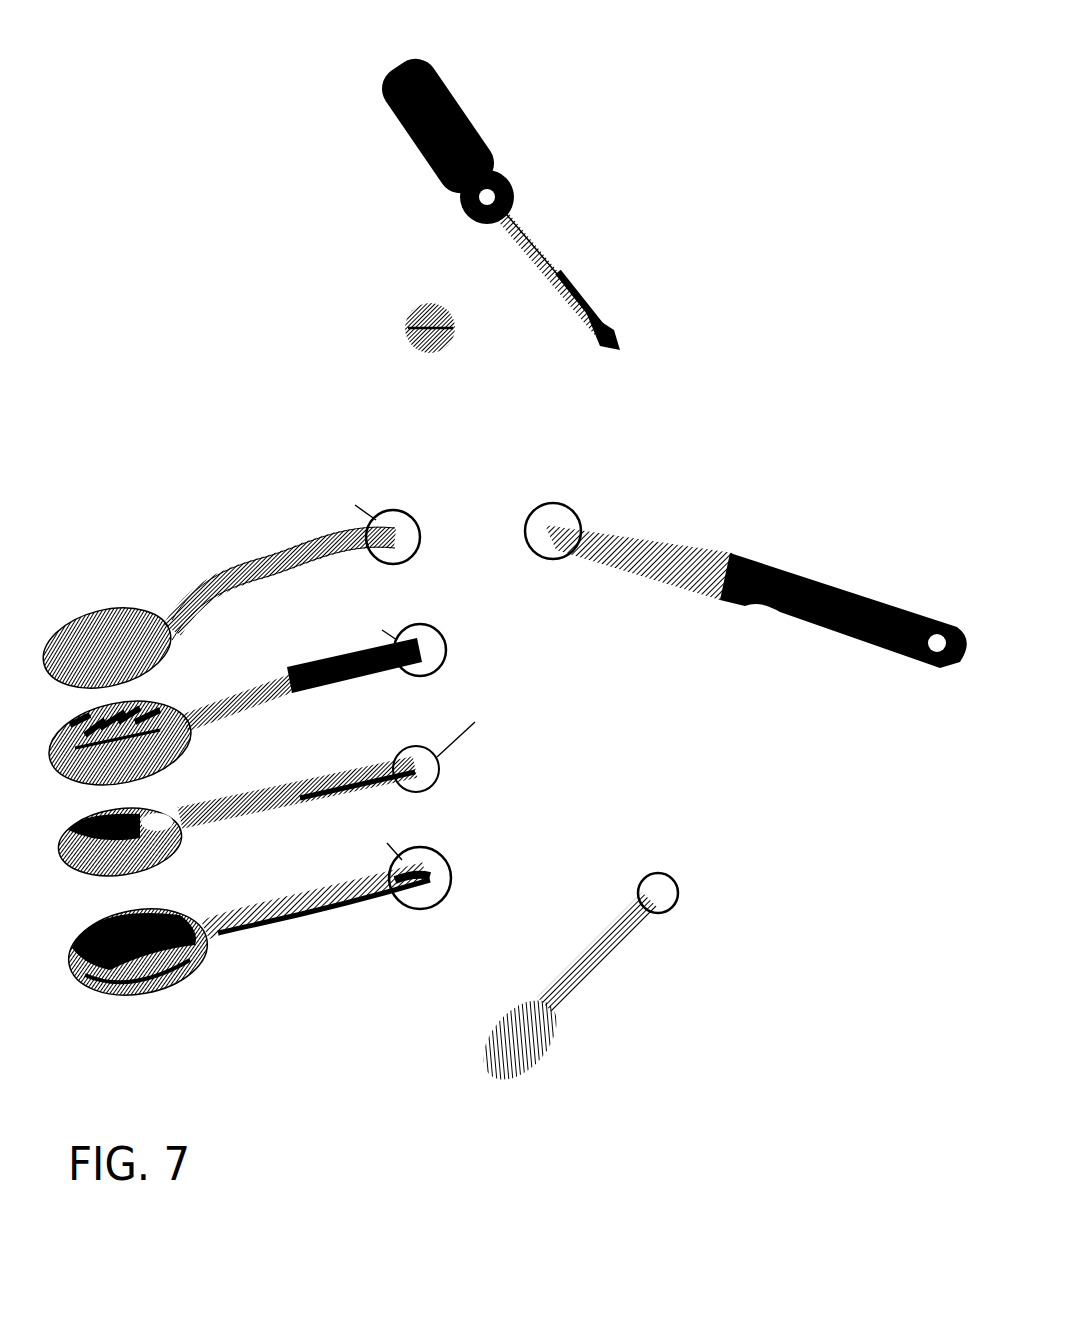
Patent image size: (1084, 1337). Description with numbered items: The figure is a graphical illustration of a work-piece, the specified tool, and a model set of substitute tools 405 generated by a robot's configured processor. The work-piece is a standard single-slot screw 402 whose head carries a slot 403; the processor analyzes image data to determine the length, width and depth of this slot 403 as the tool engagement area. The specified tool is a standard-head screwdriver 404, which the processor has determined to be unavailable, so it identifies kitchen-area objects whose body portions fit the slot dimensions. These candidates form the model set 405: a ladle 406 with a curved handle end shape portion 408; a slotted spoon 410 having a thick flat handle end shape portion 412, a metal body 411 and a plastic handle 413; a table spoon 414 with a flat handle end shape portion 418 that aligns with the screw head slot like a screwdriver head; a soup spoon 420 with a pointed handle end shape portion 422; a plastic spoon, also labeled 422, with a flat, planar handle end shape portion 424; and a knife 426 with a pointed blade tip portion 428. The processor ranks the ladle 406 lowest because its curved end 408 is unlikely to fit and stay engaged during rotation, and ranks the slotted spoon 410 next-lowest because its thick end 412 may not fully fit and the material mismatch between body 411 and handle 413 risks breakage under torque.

The screw 402 is at (412, 320).
The slot 403 is at (407, 327).
The screwdriver 404 is at (513, 222).
The model set of substitute tools 405 is at (205, 435).
The ladle 406 is at (273, 577).
The curved handle end shape portion 408 is at (403, 515).
The slotted spoon 410 is at (267, 683).
The metal body 411 is at (215, 707).
The flat handle end shape portion 412 is at (432, 618).
The plastic handle 413 is at (372, 682).
The table spoon 414 is at (303, 793).
The flat handle end shape portion 418 is at (400, 745).
The soup spoon 420 is at (263, 918).
The pointed handle end shape portion 422 is at (458, 862).
The flat, planar handle end shape portion 424 is at (645, 875).
The knife 426 is at (783, 575).
The pointed blade tip portion 428 is at (553, 559).